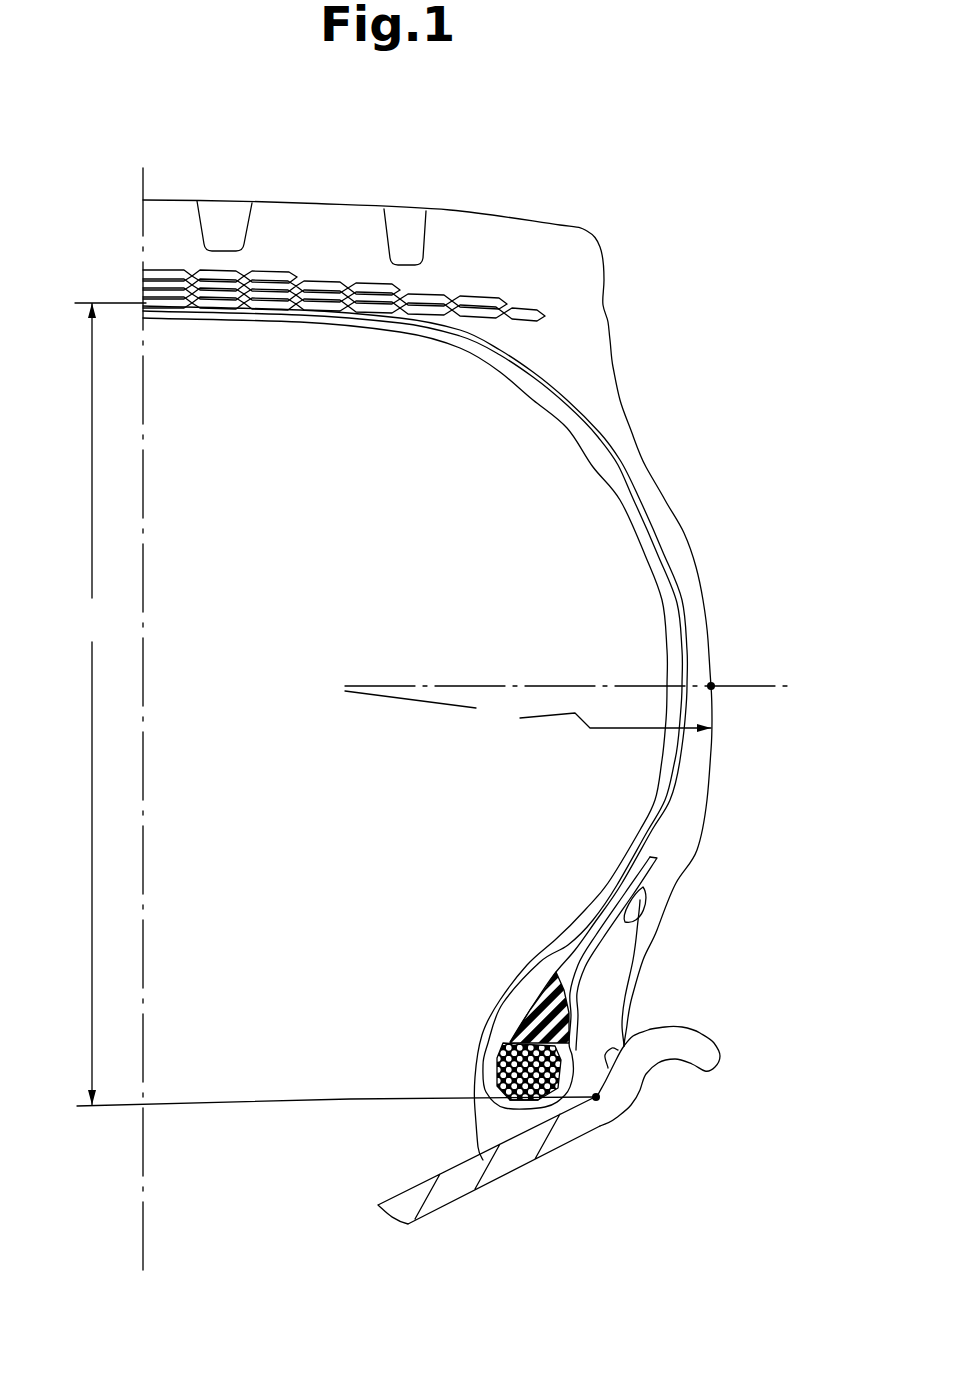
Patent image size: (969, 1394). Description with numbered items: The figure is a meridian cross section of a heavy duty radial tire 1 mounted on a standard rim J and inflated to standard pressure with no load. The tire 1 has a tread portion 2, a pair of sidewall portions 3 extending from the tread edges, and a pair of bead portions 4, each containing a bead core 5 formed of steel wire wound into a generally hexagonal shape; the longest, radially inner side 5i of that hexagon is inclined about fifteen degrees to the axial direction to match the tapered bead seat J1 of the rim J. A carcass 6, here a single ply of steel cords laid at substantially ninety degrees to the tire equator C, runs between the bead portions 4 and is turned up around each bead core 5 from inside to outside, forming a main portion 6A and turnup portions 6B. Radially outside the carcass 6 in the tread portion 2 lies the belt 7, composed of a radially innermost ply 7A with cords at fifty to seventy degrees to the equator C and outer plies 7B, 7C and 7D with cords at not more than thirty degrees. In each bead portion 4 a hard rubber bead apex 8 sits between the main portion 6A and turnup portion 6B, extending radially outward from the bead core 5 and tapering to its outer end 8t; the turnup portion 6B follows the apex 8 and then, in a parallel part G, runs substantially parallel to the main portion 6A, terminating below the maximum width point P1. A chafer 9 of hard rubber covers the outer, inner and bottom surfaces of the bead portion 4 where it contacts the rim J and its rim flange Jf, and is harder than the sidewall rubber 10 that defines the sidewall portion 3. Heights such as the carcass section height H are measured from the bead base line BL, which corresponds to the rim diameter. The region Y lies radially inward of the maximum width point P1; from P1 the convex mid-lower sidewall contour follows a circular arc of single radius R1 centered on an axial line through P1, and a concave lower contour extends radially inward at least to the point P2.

The tire 1 is at (668, 355).
The tread portion 2 is at (330, 195).
The sidewall portion 3 is at (712, 540).
The bead portion 4 is at (480, 1097).
The bead core 5 is at (490, 1066).
The radially inner side of the bead core 5i is at (533, 1095).
The carcass 6 is at (415, 707).
The carcass ply main portion 6A is at (673, 767).
The carcass ply turnup portion 6B is at (627, 918).
The belt 7 is at (344, 369).
The radially innermost belt ply 7A is at (195, 413).
The radially outer belt ply 7B is at (358, 300).
The radially outer belt ply 7C is at (306, 292).
The radially outer belt ply 7D is at (258, 270).
The bead apex 8 is at (520, 1023).
The radially outer end of the bead apex 8t is at (550, 973).
The chafer 9 is at (593, 993).
The sidewall rubber 10 is at (672, 865).
The parallel part G is at (612, 881).
The carcass section height H is at (110, 704).
The radius of the mid-lower sidewall contour R1 is at (528, 713).
The maximum width point P1 is at (714, 683).
The radially inner point of the concave lower contour P2 is at (562, 1045).
The standard rim J is at (546, 1134).
The tapered bead seat J1 is at (460, 1164).
The rim flange Jf is at (720, 1058).
The bead base line BL is at (228, 1098).
The region Y is at (742, 708).
The tire equator C is at (152, 150).